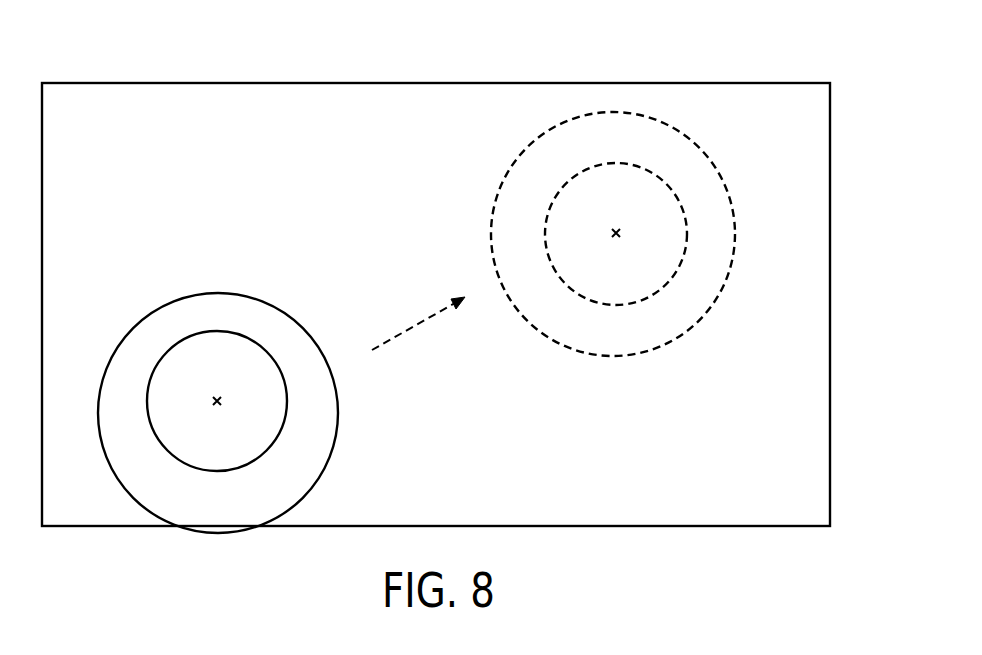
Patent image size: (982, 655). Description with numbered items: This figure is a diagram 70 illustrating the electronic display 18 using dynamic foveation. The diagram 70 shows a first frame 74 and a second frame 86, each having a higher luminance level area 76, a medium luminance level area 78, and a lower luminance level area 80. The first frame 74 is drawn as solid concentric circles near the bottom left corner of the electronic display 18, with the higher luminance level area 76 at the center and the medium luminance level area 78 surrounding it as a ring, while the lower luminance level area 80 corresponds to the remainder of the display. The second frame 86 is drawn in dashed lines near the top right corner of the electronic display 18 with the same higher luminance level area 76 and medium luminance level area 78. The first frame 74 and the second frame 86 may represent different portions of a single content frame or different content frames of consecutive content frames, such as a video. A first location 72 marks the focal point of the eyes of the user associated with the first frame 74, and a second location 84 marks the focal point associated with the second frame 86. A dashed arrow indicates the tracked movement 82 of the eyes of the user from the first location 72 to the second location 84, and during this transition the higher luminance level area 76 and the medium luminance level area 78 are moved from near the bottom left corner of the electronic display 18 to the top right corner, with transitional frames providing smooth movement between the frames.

The electronic display 18 is at (239, 83).
The diagram 70 is at (623, 48).
The first location 72 is at (221, 403).
The first frame 74 is at (126, 327).
The higher luminance level area 76 is at (180, 423).
The medium luminance level area 78 is at (414, 322).
The lower luminance level area 80 is at (98, 150).
The tracked movement 82 is at (412, 330).
The second location 84 is at (608, 232).
The second frame 86 is at (552, 342).